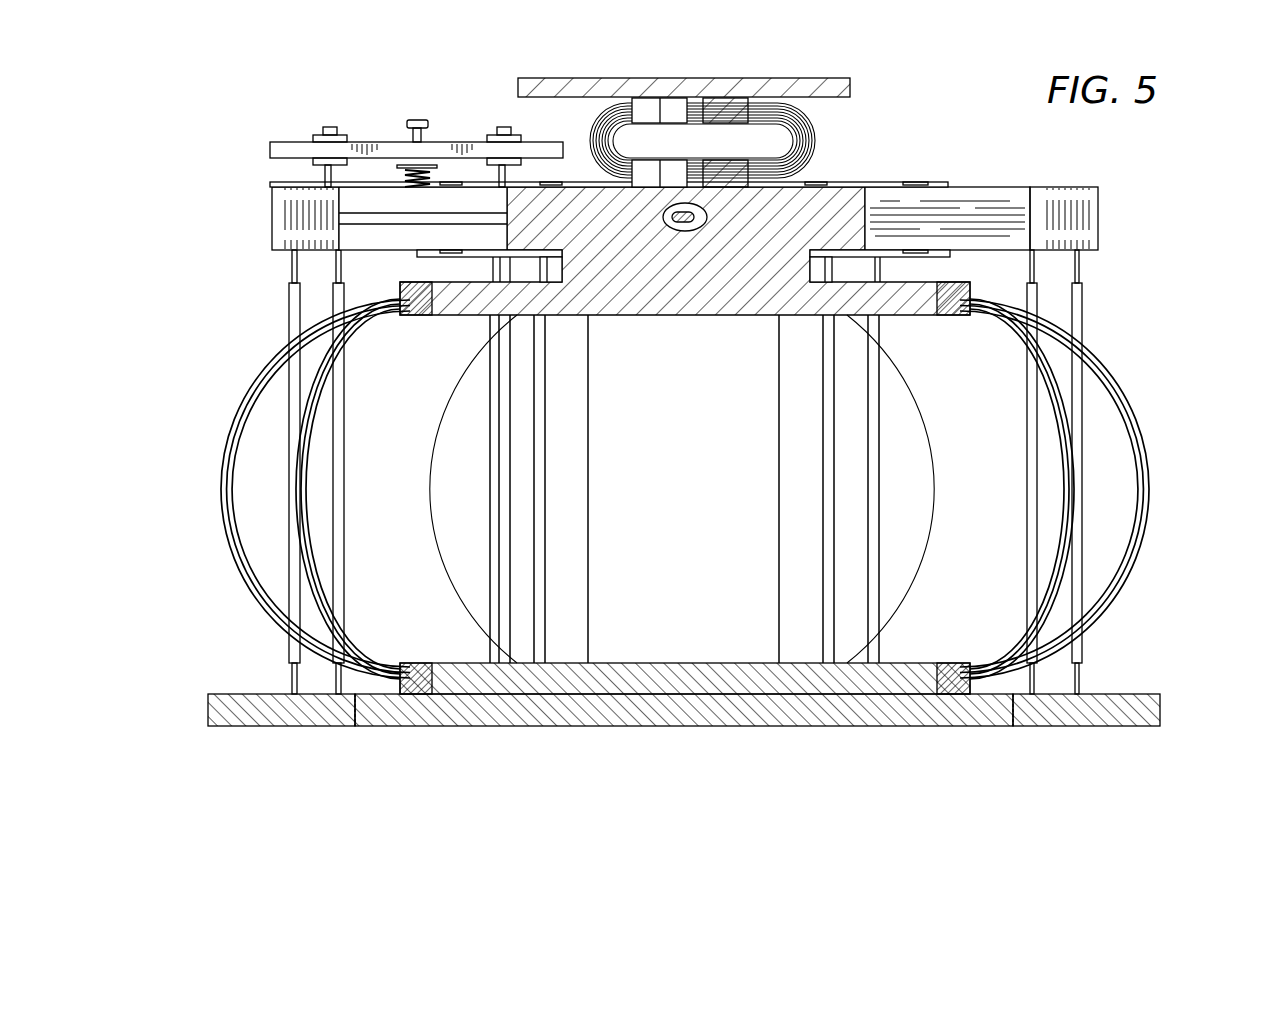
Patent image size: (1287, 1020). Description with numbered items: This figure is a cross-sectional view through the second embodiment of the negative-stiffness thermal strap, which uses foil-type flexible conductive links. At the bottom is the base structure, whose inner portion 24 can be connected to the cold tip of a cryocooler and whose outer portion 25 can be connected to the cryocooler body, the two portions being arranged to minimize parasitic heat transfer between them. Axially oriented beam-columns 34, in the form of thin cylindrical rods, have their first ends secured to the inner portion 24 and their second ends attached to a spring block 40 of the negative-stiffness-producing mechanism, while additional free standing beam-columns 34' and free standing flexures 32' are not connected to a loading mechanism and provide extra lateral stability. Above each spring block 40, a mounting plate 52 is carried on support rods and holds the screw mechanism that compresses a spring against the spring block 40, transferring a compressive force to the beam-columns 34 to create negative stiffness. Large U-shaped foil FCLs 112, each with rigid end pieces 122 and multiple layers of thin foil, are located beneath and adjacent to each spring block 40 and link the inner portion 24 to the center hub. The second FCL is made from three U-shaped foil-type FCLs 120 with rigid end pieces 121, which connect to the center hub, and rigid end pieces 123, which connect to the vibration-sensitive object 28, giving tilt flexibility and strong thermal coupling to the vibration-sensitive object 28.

The inner portion 24 is at (642, 712).
The outer portion 25 is at (292, 718).
The vibration-sensitive object 28 is at (784, 78).
The free standing transversely-oriented flexure 32' is at (623, 166).
The beam-column 34 is at (296, 472).
The free standing beam-column 34' is at (1033, 472).
The spring block 40 is at (273, 213).
The mounting plate 52 is at (270, 153).
The FCL 112 is at (222, 486).
The foil-type FCL 120 is at (598, 130).
The rigid end piece 121 is at (668, 176).
The rigid end piece 122 is at (414, 316).
The rigid end piece 123 is at (690, 120).